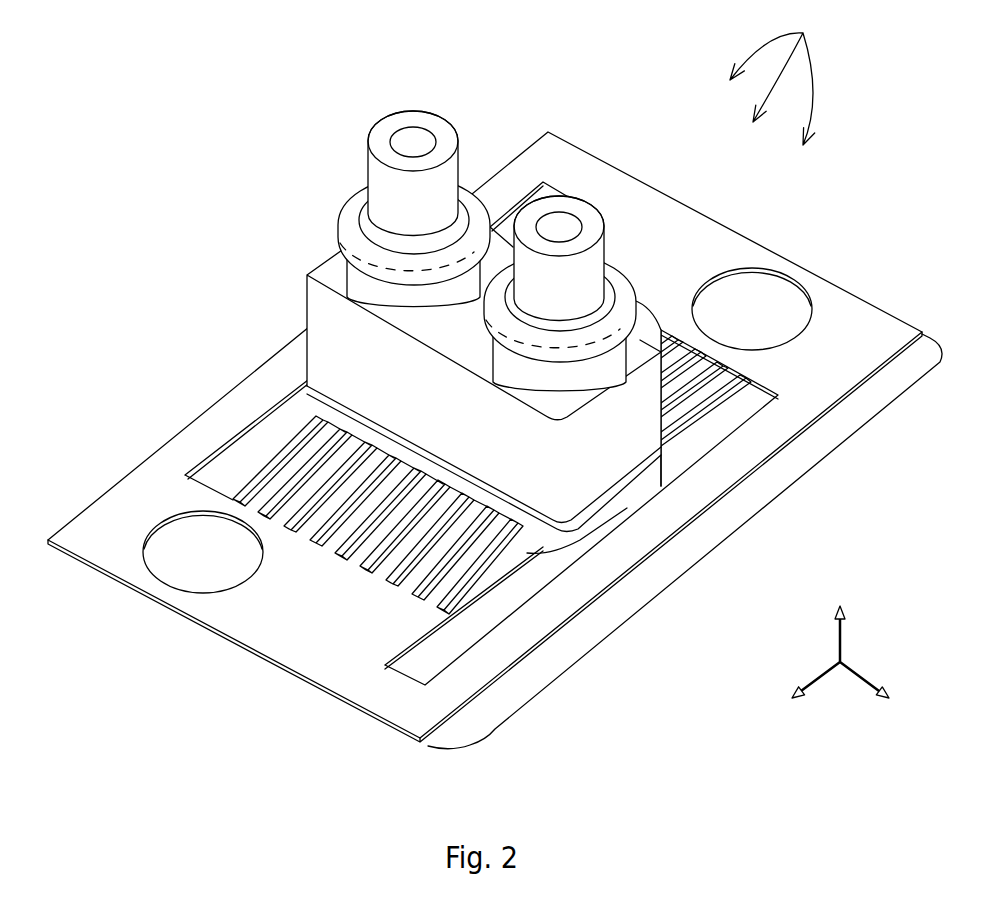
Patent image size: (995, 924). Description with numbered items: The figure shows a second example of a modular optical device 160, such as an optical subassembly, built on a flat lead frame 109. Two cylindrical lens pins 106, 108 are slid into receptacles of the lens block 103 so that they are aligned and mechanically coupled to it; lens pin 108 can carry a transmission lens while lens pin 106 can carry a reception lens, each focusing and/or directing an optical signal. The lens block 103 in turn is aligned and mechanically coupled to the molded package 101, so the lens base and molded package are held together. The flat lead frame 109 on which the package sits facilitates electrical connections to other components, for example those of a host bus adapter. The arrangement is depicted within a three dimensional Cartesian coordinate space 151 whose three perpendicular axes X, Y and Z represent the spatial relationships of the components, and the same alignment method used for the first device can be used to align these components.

The molded package 101 is at (662, 457).
The lens block 103 is at (307, 312).
The lens pin 106 is at (612, 236).
The lens pin 108 is at (366, 163).
The flat lead frame 109 is at (740, 518).
The three dimensional Cartesian coordinate space 151 is at (867, 638).
The modular optical device 160 is at (784, 83).